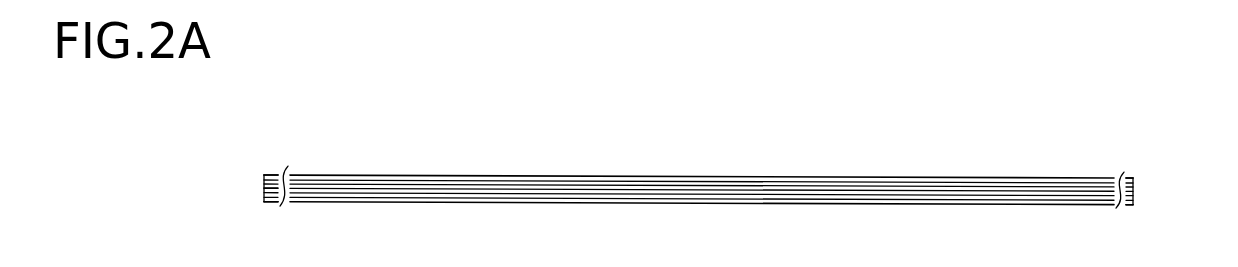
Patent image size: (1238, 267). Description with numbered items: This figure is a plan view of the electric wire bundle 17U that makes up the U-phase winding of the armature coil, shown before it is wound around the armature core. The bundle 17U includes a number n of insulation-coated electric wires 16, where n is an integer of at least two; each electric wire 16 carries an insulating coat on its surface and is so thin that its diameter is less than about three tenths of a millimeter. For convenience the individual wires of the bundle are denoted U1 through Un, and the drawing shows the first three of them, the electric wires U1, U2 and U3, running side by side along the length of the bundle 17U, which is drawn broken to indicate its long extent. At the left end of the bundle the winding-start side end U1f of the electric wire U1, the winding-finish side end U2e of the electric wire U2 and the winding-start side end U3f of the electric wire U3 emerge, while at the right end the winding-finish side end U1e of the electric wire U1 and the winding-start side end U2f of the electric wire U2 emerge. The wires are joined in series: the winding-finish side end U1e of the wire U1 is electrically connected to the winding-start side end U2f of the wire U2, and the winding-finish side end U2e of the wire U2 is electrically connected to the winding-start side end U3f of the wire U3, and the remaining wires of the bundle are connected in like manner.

The electric wire bundle 17U is at (698, 150).
The insulation-coated electric wire 16 is at (647, 182).
The electric wire U1 is at (433, 178).
The electric wire U2 is at (465, 183).
The electric wire U3 is at (528, 192).
The winding-start side end of electric wire U1 U1f is at (264, 180).
The winding-finish side end of electric wire U2 U2e is at (264, 189).
The winding-start side end of electric wire U3 U3f is at (264, 196).
The winding-finish side end of electric wire U1 U1e is at (1133, 181).
The winding-start side end of electric wire U2 U2f is at (1133, 191).